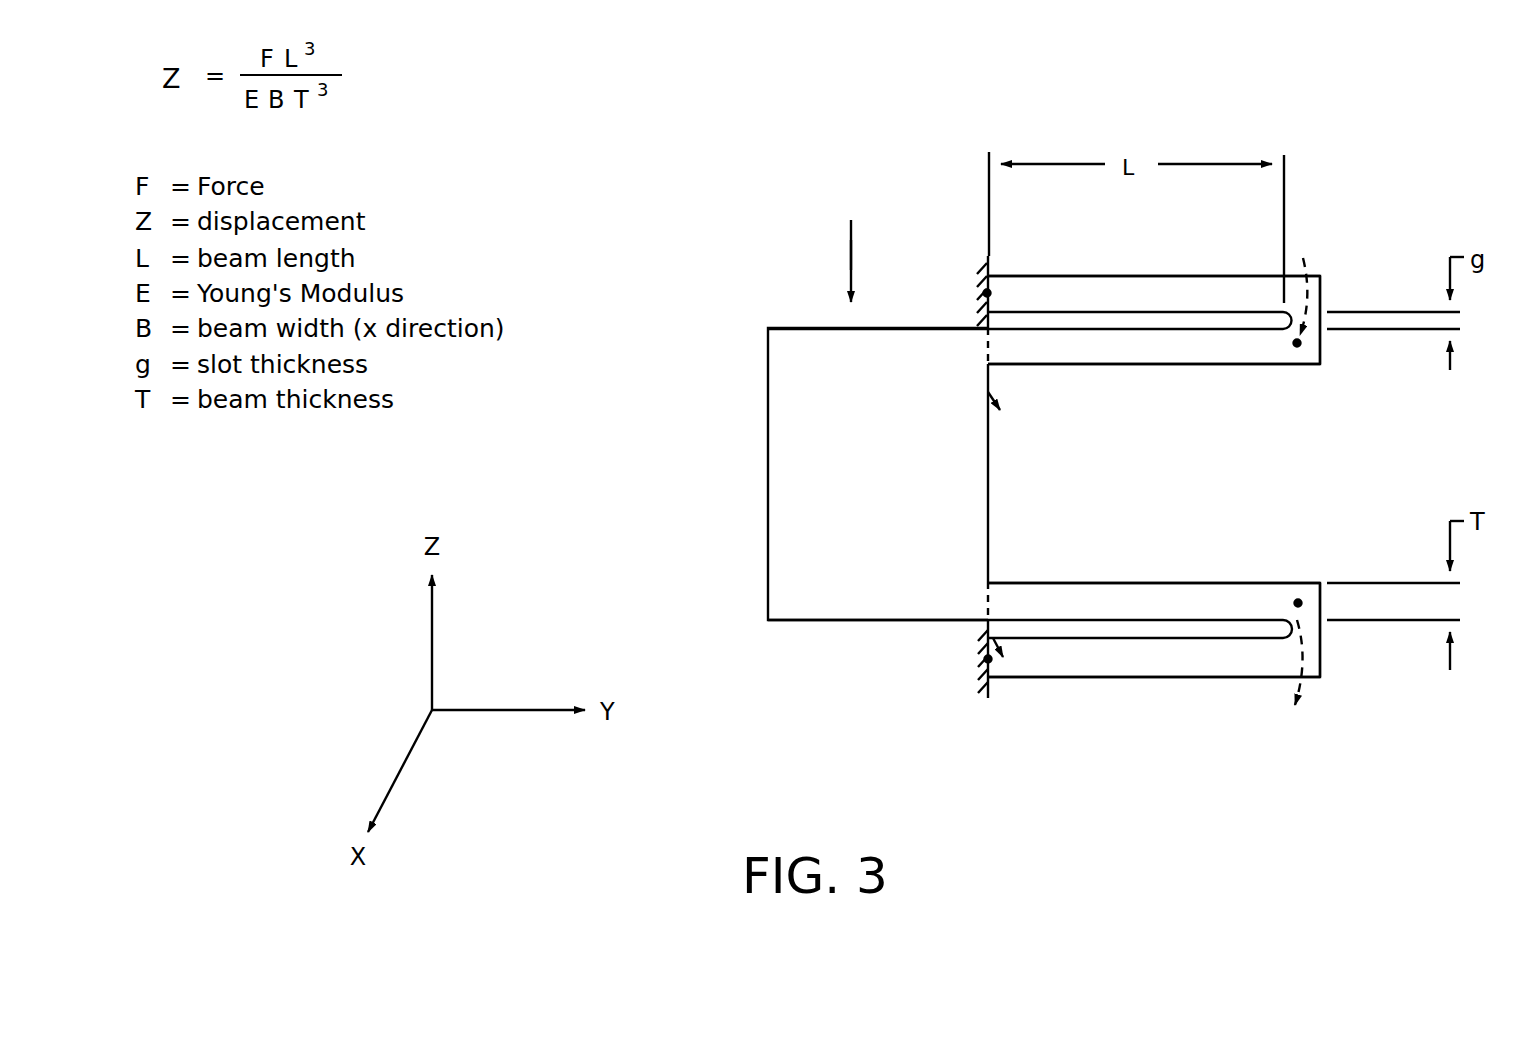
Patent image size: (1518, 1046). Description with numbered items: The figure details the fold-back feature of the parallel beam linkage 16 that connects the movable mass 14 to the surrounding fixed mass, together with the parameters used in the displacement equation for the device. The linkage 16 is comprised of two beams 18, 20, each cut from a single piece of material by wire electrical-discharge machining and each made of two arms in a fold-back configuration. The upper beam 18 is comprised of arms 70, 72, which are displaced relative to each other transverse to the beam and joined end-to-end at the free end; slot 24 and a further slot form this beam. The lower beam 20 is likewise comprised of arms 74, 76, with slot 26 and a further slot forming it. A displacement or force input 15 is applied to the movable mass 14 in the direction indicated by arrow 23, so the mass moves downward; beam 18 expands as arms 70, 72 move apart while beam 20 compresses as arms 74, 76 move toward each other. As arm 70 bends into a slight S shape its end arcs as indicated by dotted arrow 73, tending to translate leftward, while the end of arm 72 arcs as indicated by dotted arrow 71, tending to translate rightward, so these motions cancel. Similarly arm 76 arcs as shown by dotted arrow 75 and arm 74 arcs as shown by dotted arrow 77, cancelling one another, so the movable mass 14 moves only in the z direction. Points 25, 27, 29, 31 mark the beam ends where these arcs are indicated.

The movable mass 14 is at (822, 600).
The displacement or force input 15 is at (851, 246).
The linkage 16 is at (1256, 367).
The beam 18 is at (1323, 292).
The beam 20 is at (1322, 662).
The arrow 23 is at (853, 252).
The slot 24 is at (998, 320).
The upper beam root point 25 is at (988, 292).
The slot 26 is at (985, 631).
The upper beam tip point 27 is at (1298, 346).
The lower beam tip point 29 is at (1299, 601).
The lower beam root point 31 is at (990, 661).
The arm 70 is at (1167, 290).
The dotted arrow 71 is at (995, 393).
The arm 72 is at (1197, 350).
The dotted arrow 73 is at (1305, 258).
The arm 74 is at (1196, 660).
The dotted arrow 75 is at (994, 570).
The arm 76 is at (1116, 600).
The dotted arrow 77 is at (1298, 696).